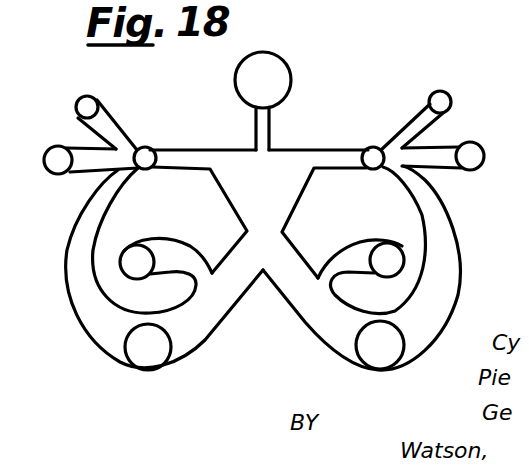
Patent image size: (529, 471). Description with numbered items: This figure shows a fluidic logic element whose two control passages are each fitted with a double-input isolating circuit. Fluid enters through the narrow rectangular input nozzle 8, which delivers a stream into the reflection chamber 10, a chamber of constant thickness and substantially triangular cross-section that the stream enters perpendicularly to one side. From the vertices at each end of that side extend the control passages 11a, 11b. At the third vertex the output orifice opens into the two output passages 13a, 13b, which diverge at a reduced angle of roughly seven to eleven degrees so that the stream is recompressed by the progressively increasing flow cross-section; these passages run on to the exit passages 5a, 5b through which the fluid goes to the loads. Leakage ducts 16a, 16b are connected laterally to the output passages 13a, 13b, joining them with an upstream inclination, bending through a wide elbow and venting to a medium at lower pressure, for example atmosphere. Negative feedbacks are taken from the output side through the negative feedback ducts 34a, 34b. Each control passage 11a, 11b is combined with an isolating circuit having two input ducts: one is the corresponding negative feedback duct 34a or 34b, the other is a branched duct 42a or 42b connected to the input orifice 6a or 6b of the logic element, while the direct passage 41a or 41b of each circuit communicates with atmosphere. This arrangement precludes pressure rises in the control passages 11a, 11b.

The exit passage 5a is at (153, 358).
The exit passage 5b is at (385, 360).
The input orifice 6a is at (82, 100).
The input orifice 6b is at (441, 92).
The input nozzle 8 is at (258, 138).
The reflection chamber 10 is at (259, 212).
The control passage 11a is at (192, 160).
The control passage 11b is at (328, 155).
The output passage 13a is at (207, 315).
The output passage 13b is at (315, 320).
The leakage duct 16a is at (168, 257).
The leakage duct 16b is at (354, 258).
The negative feedback duct 34a is at (72, 250).
The negative feedback duct 34b is at (437, 242).
The direct passage 41a is at (80, 163).
The direct passage 41b is at (445, 148).
The arm 42a is at (104, 134).
The arm 42b is at (418, 130).